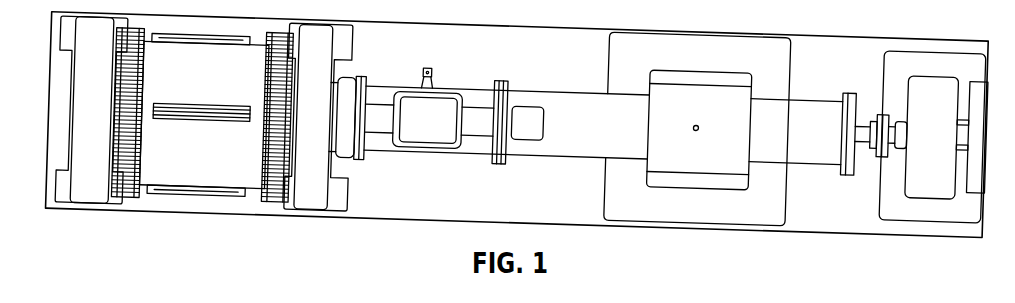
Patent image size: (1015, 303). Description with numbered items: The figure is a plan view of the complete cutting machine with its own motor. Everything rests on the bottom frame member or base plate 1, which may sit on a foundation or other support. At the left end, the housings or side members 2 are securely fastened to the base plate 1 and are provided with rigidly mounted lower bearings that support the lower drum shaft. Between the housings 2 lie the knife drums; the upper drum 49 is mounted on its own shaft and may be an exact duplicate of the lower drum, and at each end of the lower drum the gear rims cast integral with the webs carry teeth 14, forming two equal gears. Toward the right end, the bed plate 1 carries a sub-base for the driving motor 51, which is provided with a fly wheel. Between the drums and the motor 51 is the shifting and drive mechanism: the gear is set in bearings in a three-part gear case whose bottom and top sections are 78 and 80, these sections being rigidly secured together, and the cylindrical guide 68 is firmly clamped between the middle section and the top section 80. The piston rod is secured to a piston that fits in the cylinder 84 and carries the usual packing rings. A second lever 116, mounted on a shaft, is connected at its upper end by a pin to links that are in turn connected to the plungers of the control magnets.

The base plate 1 is at (517, 125).
The housings 2 is at (204, 113).
The teeth 14 is at (202, 115).
The upper drum 49 is at (204, 115).
The driving motor 51 is at (934, 137).
The cylindrical guide 68 is at (618, 126).
The bottom section of gear case 78 is at (570, 35).
The top section of gear case 80 is at (698, 130).
The cylinder 84 is at (419, 147).
The second lever 116 is at (461, 67).